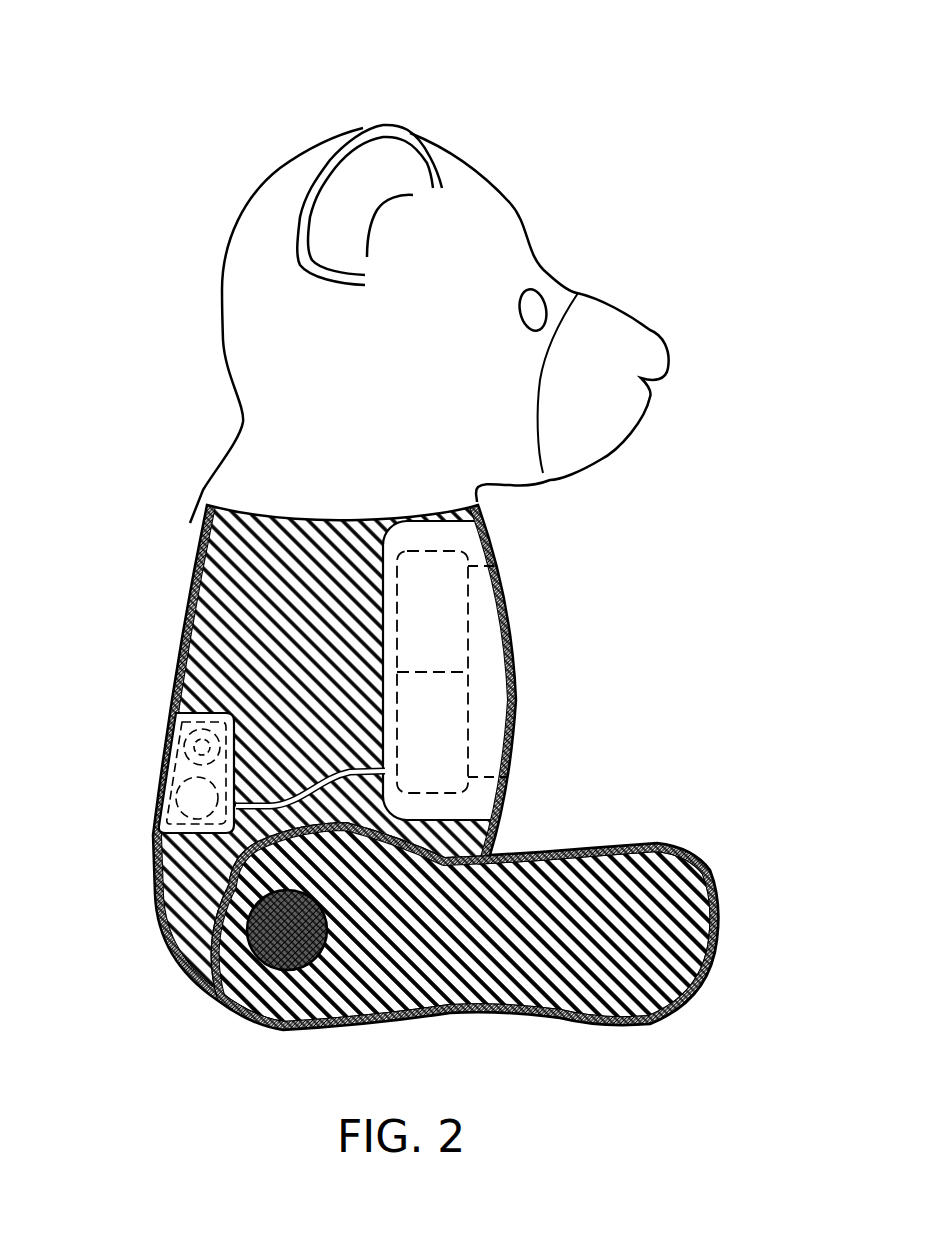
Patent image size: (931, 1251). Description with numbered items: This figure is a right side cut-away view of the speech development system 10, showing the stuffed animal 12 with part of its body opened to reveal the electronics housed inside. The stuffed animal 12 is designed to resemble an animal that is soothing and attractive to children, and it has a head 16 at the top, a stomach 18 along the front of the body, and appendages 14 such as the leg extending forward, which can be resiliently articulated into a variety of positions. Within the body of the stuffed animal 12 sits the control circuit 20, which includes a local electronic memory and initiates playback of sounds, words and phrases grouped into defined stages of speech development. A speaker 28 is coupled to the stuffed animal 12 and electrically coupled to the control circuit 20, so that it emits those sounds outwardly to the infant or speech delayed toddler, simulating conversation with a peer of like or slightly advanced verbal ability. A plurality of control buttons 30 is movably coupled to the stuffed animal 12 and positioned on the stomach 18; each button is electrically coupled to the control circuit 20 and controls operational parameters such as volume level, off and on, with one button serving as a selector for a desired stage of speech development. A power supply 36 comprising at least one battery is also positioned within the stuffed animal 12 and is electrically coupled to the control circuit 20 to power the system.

The speech development system 10 is at (197, 122).
The stuffed animal 12 is at (524, 185).
The appendages 14 is at (640, 843).
The head 16 is at (452, 155).
The stomach 18 is at (517, 777).
The control circuit 20 is at (460, 552).
The speaker 28 is at (458, 793).
The control buttons 30 is at (526, 768).
The power supply 36 is at (183, 744).